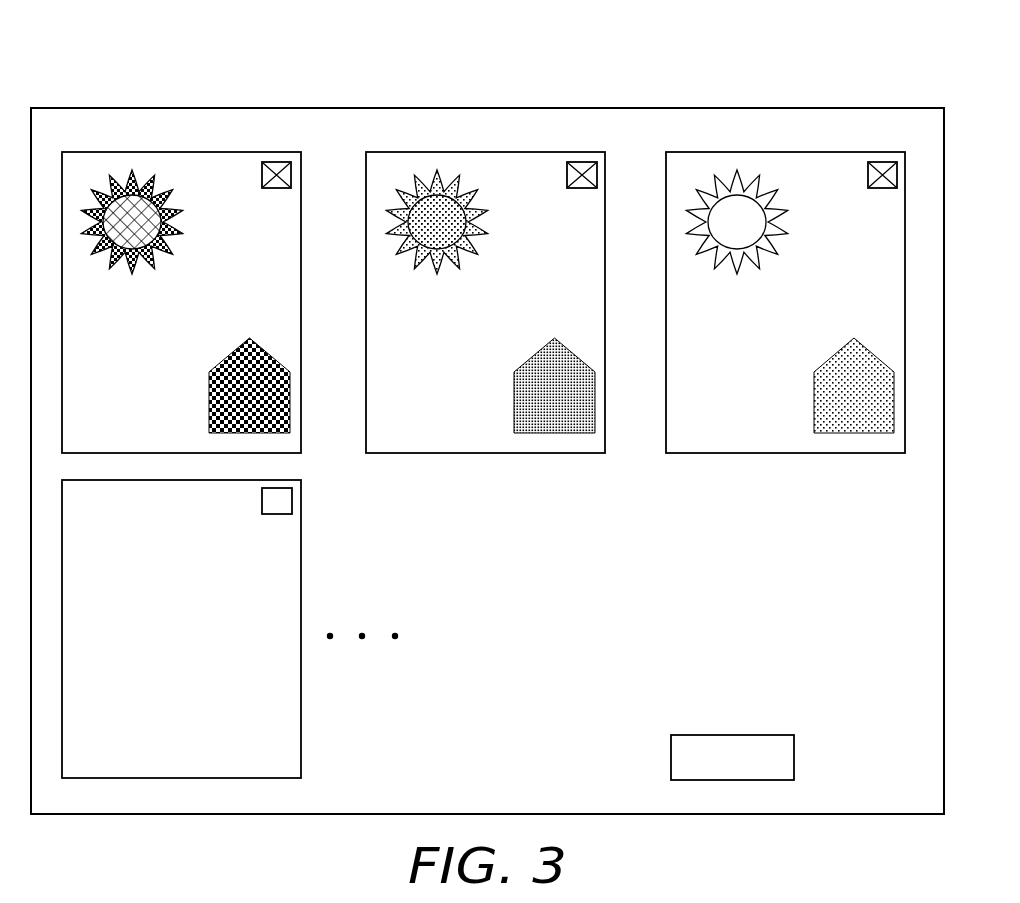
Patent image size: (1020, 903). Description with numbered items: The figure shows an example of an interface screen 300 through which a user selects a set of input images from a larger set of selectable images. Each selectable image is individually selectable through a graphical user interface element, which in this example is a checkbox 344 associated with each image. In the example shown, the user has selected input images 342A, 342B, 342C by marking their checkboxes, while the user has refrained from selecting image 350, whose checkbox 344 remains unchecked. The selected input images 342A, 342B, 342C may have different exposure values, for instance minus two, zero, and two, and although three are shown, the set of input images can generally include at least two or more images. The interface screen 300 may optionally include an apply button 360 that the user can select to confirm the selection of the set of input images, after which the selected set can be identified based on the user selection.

The interface screen 300 is at (870, 74).
The input image 342A is at (160, 336).
The input image 342B is at (460, 332).
The input image 342C is at (742, 332).
The checkbox 344 is at (262, 174).
The image 350 is at (135, 564).
The apply button 360 is at (752, 770).